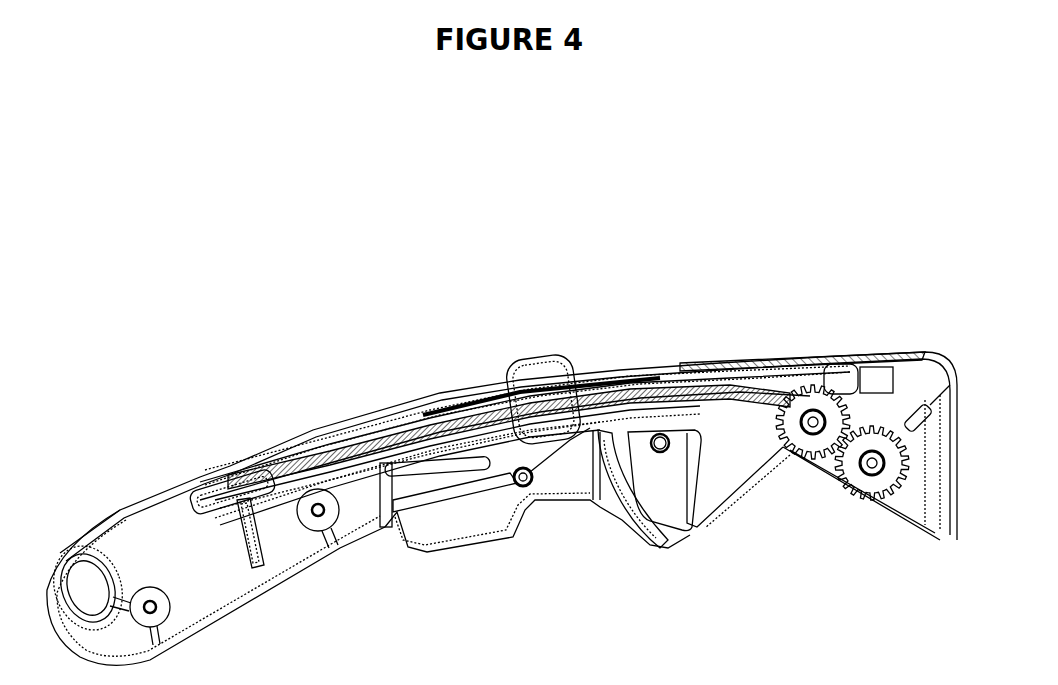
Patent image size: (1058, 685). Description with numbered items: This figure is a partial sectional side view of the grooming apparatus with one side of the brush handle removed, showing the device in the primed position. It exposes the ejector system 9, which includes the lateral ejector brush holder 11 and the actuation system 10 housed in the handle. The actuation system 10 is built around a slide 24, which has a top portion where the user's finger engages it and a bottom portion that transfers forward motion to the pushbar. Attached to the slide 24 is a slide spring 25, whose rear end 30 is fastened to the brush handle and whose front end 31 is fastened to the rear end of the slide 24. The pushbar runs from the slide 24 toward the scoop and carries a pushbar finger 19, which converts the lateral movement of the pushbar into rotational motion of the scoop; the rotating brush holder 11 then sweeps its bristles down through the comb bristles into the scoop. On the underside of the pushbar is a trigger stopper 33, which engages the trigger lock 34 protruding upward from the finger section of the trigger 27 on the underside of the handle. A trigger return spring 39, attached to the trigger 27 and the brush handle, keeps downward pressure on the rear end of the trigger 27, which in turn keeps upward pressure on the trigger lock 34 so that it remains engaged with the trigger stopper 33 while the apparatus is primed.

The ejector system 9 is at (847, 530).
The actuation system 10 is at (556, 540).
The lateral ejector brush holder 11 is at (903, 427).
The pushbar finger 19 is at (838, 385).
The slide 24 is at (492, 415).
The slide spring 25 is at (323, 457).
The trigger 27 is at (458, 575).
The rear end of slide spring 30 is at (260, 478).
The front end of slide spring 31 is at (410, 440).
The trigger stopper 33 is at (600, 430).
The trigger lock 34 is at (583, 432).
The trigger return spring 39 is at (427, 505).